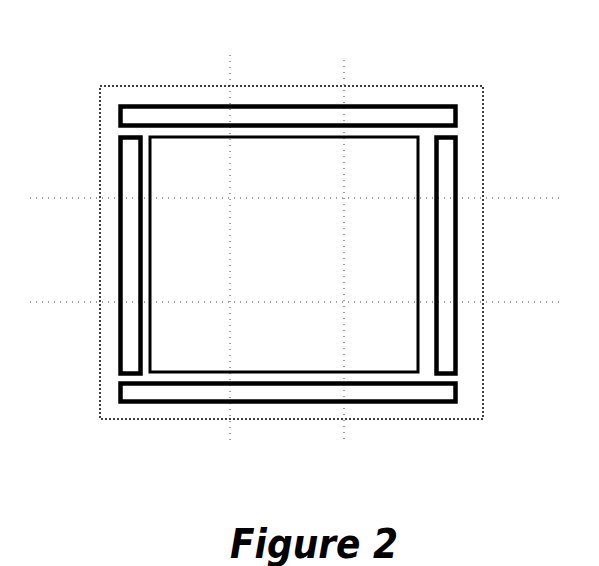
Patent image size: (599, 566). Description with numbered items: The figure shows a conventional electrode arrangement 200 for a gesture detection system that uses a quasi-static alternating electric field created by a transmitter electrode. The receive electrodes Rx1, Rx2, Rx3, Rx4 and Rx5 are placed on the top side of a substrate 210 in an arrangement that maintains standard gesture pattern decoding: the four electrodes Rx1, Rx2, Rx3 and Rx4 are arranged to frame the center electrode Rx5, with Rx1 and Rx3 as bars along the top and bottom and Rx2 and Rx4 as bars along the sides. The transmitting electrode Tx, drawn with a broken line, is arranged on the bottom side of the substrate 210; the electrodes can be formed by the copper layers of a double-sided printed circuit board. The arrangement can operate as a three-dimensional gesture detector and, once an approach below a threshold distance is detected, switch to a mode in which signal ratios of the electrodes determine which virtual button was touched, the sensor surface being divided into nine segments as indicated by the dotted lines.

The electrode arrangement 200 is at (226, 45).
The substrate 210 is at (425, 86).
The transmitting electrode Tx is at (442, 105).
The Rx electrode Rx1 is at (288, 116).
The Rx electrode Rx2 is at (449, 256).
The Rx electrode Rx3 is at (288, 393).
The Rx electrode Rx4 is at (133, 256).
The center electrode Rx5 is at (283, 254).